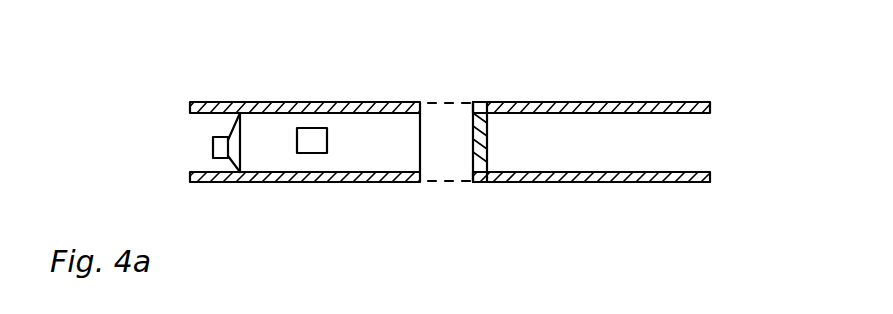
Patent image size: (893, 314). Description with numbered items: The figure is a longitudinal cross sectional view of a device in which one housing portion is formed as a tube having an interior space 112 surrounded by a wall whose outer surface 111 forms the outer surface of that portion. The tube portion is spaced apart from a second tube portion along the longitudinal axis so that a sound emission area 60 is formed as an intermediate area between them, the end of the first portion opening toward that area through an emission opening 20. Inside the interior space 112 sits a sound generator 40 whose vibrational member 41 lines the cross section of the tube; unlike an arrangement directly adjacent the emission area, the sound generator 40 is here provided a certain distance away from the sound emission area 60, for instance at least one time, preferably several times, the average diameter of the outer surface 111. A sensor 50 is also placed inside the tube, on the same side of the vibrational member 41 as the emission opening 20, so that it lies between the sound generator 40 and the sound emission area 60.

The emission opening 20 is at (449, 190).
The sound generator 40 is at (181, 154).
The vibrational member 41 is at (234, 166).
The sensor 50 is at (314, 138).
The sound emission area 60 is at (448, 98).
The outer surface 111 is at (285, 184).
The interior space 112 is at (372, 146).